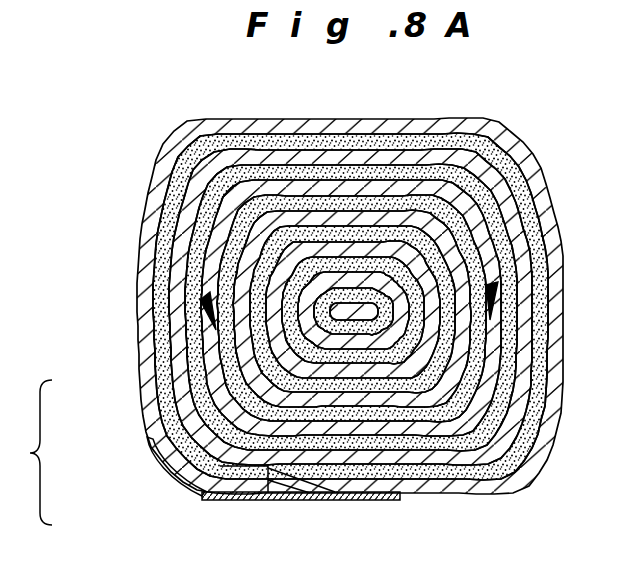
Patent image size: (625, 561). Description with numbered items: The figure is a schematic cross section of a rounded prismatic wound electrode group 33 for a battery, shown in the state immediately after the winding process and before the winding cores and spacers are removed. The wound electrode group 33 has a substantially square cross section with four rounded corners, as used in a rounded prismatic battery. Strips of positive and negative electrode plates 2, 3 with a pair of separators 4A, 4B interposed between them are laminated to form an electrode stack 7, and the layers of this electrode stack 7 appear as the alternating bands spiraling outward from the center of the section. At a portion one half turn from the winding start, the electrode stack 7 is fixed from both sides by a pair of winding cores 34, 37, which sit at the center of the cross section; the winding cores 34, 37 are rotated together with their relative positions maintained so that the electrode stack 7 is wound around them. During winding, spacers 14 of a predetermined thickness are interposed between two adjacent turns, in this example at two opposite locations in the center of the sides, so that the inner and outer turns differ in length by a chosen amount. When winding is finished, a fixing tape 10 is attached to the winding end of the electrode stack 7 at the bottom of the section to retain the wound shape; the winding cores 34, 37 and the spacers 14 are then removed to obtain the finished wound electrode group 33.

The positive electrode plate 2 is at (143, 365).
The negative electrode plate 3 is at (158, 410).
The separator 4A is at (250, 500).
The separator 4B is at (297, 500).
The electrode stack 7 is at (33, 452).
The fixing tape 10 is at (387, 500).
The spacer 14 is at (197, 303).
The wound electrode group 33 is at (508, 125).
The winding core 34 is at (343, 292).
The winding core 37 is at (365, 322).